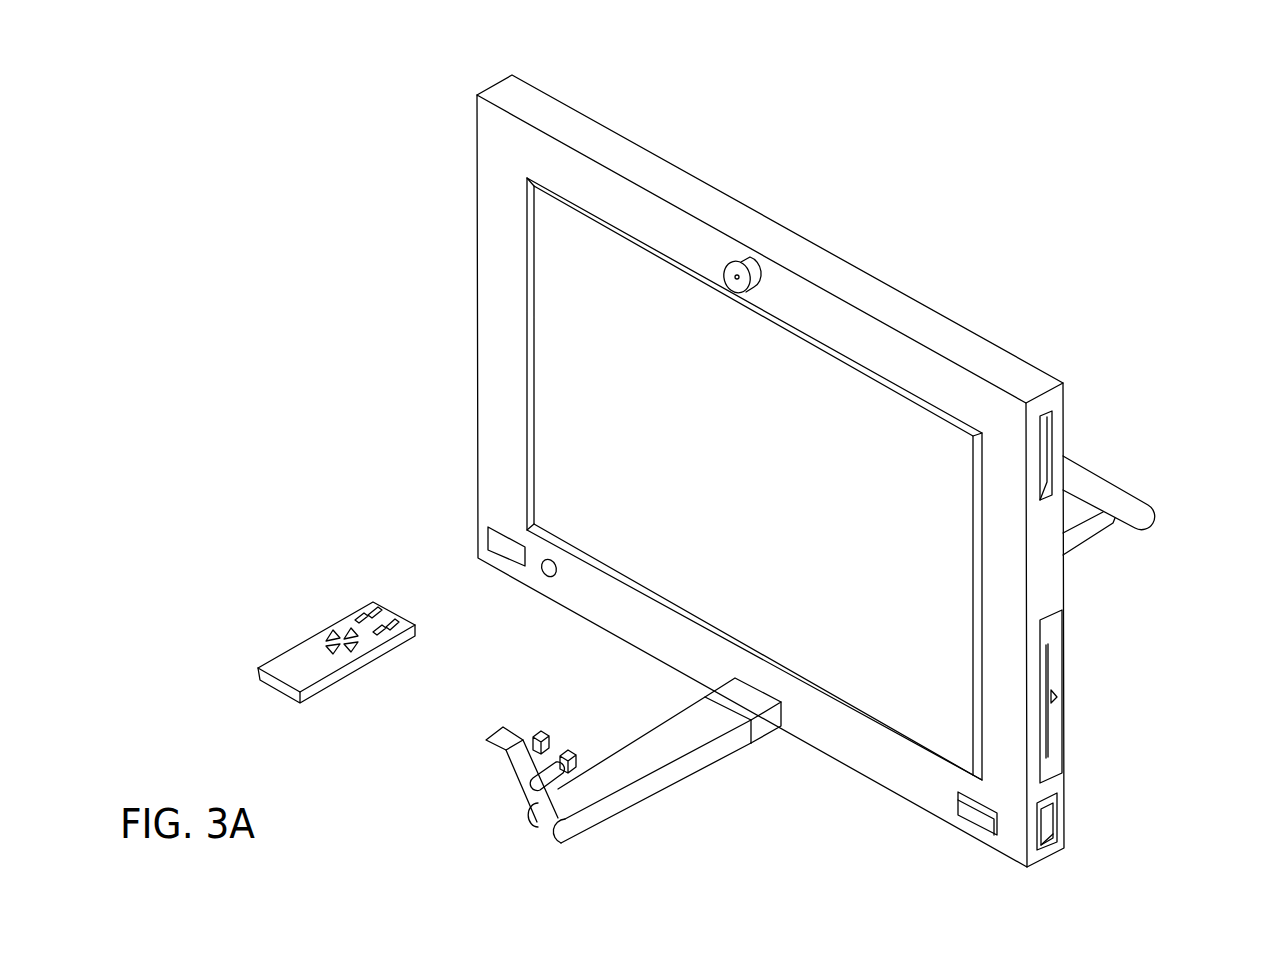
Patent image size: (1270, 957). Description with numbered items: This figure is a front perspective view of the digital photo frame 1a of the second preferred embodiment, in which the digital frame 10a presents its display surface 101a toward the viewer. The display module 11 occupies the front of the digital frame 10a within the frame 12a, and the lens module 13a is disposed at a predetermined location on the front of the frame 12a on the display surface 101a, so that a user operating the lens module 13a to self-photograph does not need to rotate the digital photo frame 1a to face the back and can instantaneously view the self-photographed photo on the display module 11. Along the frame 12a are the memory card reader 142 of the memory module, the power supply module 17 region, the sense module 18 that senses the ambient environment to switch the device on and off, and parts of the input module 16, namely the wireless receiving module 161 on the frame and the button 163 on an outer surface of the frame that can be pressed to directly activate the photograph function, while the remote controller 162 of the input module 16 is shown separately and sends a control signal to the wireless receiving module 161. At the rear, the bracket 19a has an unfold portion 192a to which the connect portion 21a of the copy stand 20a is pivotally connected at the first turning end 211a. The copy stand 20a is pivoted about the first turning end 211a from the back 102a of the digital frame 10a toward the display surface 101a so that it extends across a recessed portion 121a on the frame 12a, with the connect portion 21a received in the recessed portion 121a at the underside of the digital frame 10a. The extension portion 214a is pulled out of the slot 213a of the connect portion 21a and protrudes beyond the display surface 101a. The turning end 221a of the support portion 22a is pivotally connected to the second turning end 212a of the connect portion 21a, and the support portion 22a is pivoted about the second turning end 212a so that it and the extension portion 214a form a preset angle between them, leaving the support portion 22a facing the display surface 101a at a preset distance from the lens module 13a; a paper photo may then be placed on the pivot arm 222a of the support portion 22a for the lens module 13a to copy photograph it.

The digital photo frame 1a is at (1060, 198).
The digital frame 10a is at (703, 179).
The display module 11 is at (555, 327).
The frame 12a is at (932, 333).
The lens module 13a is at (738, 275).
The display surface 101a is at (886, 768).
The back 102a is at (1065, 803).
The recessed portion 121a is at (786, 725).
The memory card reader 142 is at (1048, 425).
The input module 16 is at (397, 495).
The wireless receiving module 161 is at (494, 540).
The remote controller 162 is at (292, 653).
The button 163 is at (973, 812).
The power supply module 17 is at (1052, 738).
The sense module 18 is at (545, 578).
The bracket 19a is at (1086, 478).
The unfold portion 192a is at (1145, 512).
The copy stand 20a is at (617, 673).
The connect portion 21a is at (643, 748).
The first turning end 211a is at (1110, 525).
The second turning end 212a is at (568, 832).
The slot 213a is at (720, 700).
The extension portion 214a is at (678, 769).
The support portion 22a is at (500, 733).
The turning end 221a is at (540, 820).
The pivot arm 222a is at (530, 776).